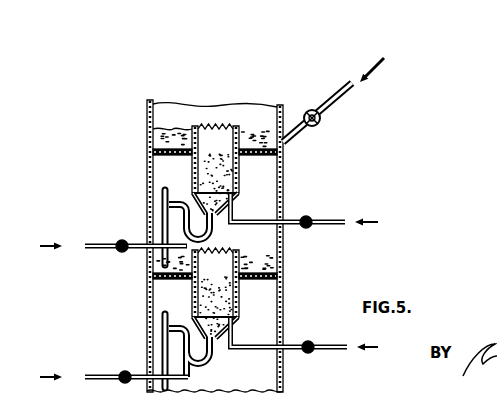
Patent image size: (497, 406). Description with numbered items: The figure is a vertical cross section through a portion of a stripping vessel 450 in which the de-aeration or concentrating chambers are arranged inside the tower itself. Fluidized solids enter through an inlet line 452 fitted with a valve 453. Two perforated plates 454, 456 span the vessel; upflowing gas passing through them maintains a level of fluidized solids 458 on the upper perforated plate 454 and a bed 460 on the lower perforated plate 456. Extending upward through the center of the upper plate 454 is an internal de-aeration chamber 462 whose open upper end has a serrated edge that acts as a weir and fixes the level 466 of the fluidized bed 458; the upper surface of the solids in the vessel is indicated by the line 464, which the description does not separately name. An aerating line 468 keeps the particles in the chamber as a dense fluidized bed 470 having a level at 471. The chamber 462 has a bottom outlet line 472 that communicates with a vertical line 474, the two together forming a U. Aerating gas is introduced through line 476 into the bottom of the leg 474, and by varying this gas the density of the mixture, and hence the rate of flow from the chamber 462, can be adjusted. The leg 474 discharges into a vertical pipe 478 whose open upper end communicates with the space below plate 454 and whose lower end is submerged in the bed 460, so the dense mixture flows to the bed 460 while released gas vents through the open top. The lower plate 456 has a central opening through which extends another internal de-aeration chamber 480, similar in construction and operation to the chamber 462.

The stripping vessel 450 is at (285, 370).
The inlet line 452 is at (336, 98).
The valve 453 is at (322, 124).
The perforated plate 454 is at (255, 155).
The perforated plate 456 is at (260, 282).
The fluidized solids 458 is at (258, 128).
The bed 460 is at (265, 263).
The internal de-aeration chamber 462 is at (192, 143).
The liquid surface 464 is at (217, 124).
The level 466 is at (165, 127).
The aerating line 468 is at (300, 222).
The dense fluidized bed 470 is at (194, 183).
The level 471 is at (215, 161).
The bottom outlet line 472 is at (210, 231).
The vertical line 474 is at (163, 207).
The line 476 is at (141, 249).
The vertical pipe 478 is at (160, 226).
The internal de-aeration chamber 480 is at (195, 308).